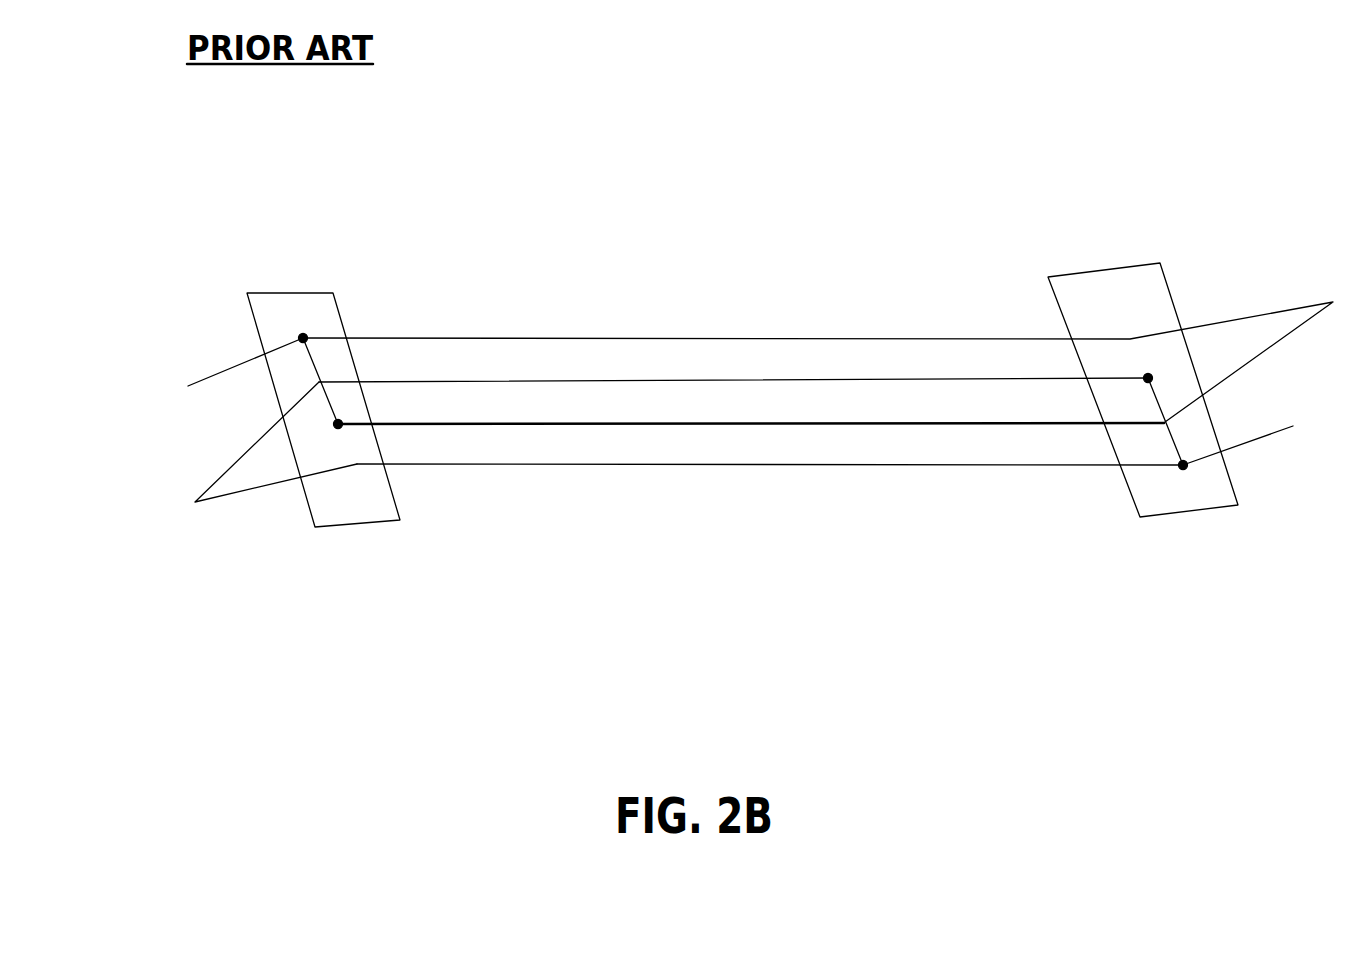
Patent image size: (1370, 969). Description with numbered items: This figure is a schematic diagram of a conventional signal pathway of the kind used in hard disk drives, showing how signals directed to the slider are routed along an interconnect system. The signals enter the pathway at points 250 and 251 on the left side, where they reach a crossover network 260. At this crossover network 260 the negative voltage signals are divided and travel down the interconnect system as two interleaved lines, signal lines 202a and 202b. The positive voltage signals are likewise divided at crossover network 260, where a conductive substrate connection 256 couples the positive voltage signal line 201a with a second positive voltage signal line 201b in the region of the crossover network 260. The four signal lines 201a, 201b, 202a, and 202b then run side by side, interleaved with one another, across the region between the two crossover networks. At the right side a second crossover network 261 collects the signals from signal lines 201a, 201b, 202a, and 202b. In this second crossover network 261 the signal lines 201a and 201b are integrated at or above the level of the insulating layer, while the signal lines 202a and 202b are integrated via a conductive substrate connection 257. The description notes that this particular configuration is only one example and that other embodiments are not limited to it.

The point 250 is at (180, 388).
The point 251 is at (187, 512).
The conductive substrate connection 256 is at (319, 382).
The conductive substrate connection 257 is at (1173, 440).
The crossover network 260 is at (290, 293).
The second crossover network 261 is at (1157, 263).
The signal line 201a is at (792, 425).
The signal line 201b is at (843, 338).
The signal line 202a is at (512, 467).
The signal line 202b is at (627, 382).